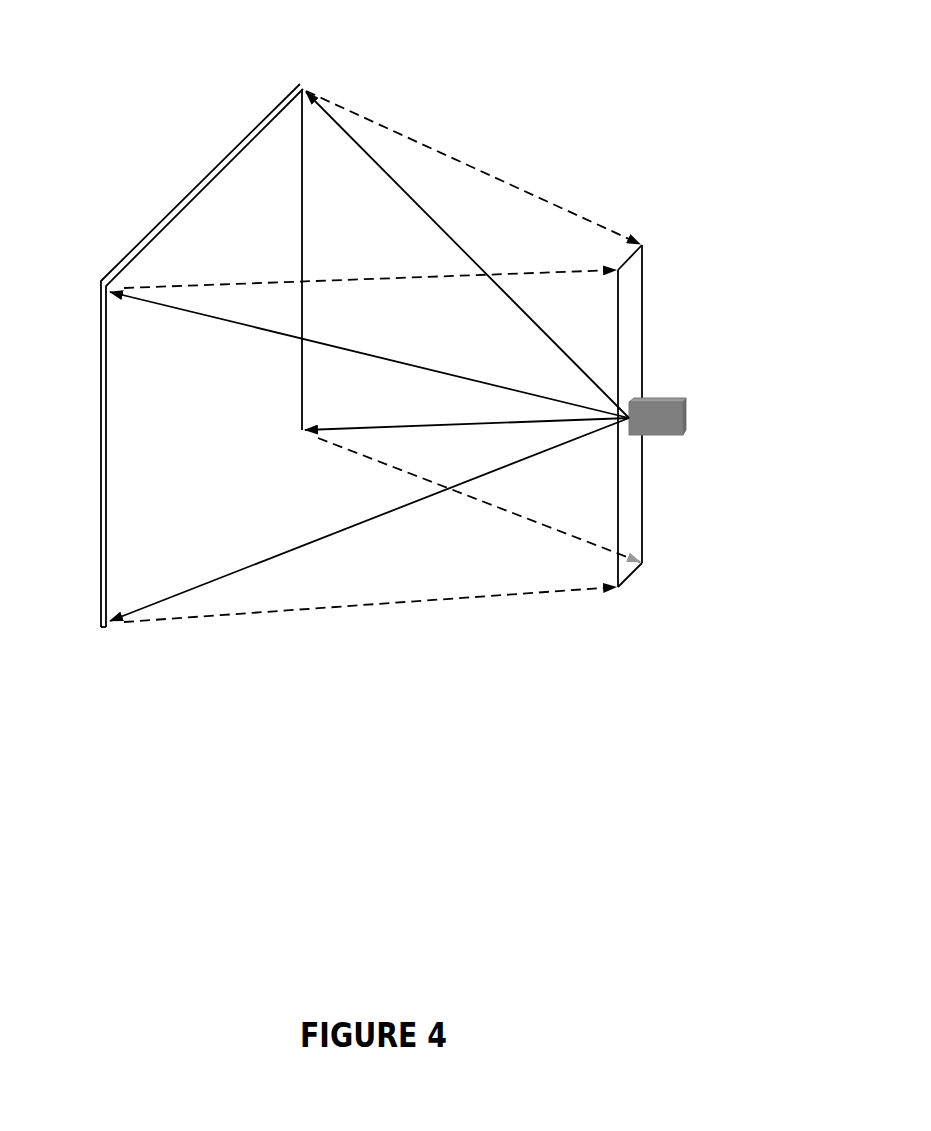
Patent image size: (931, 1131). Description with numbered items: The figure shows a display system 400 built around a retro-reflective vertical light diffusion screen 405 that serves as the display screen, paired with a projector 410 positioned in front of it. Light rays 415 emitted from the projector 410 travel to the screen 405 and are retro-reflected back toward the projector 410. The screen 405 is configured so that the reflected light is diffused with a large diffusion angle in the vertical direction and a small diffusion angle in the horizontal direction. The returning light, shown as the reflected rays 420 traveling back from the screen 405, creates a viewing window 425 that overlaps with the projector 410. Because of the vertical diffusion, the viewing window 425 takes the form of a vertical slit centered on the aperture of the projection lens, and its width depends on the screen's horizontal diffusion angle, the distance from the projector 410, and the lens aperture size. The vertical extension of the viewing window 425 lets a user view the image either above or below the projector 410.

The display system 400 is at (422, 31).
The retro-reflective vertical light diffusion screen 405 is at (163, 205).
The projector 410 is at (685, 420).
The light rays 415 is at (572, 444).
The retro-reflected light rays 420 is at (505, 600).
The viewing window 425 is at (647, 303).